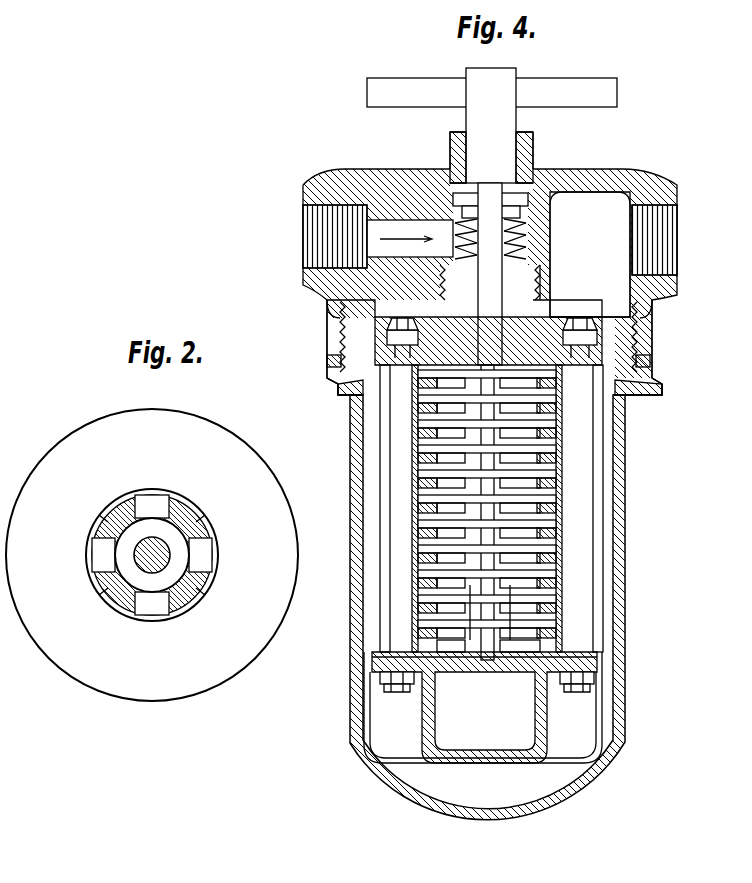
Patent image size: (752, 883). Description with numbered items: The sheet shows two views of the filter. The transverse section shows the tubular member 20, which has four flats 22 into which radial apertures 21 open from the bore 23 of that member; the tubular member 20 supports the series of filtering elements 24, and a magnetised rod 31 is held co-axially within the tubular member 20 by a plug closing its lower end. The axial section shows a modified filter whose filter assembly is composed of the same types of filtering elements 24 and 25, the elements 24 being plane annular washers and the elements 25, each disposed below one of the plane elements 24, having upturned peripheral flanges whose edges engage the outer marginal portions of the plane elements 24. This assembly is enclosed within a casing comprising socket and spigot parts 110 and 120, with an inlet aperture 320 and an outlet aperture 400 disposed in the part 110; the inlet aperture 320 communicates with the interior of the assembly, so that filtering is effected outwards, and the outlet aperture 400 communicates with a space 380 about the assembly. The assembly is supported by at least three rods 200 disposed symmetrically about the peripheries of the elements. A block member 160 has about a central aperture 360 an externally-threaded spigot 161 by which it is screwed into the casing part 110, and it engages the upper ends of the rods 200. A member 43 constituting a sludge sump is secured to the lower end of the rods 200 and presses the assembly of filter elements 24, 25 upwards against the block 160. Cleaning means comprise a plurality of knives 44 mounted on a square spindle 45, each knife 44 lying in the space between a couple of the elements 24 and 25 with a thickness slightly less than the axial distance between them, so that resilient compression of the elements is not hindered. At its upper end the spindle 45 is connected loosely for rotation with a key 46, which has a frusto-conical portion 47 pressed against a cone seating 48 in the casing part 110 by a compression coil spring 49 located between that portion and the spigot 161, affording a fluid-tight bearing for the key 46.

In FIG. 2, the tubular member 20 is at (190, 527).
In FIG. 2, the radial apertures 21 is at (152, 505).
In FIG. 2, the flats 22 is at (125, 517).
In FIG. 2, the bore 23 is at (133, 577).
In FIG. 2, the filtering elements 24 is at (205, 455).
In FIG. 4, the filtering elements 24 is at (415, 470).
In FIG. 4, the filtering elements 25 is at (415, 520).
In FIG. 2, the magnetised rod 31 is at (170, 557).
In FIG. 4, the sludge sump member 43 is at (545, 722).
In FIG. 4, the knives 44 is at (530, 640).
In FIG. 4, the square spindle 45 is at (440, 350).
In FIG. 4, the key 46 is at (495, 95).
In FIG. 4, the frusto-conical portion 47 is at (510, 192).
In FIG. 4, the cone seating 48 is at (457, 152).
In FIG. 4, the compression coil spring 49 is at (525, 230).
In FIG. 4, the socket casing part 110 is at (375, 176).
In FIG. 4, the spigot casing part 120 is at (352, 690).
In FIG. 4, the block member 160 is at (560, 332).
In FIG. 4, the externally-threaded spigot 161 is at (530, 292).
In FIG. 4, the rods 200 is at (598, 535).
In FIG. 4, the inlet aperture 320 is at (323, 228).
In FIG. 4, the central aperture 360 is at (440, 305).
In FIG. 4, the space 380 is at (603, 460).
In FIG. 4, the outlet aperture 400 is at (652, 205).